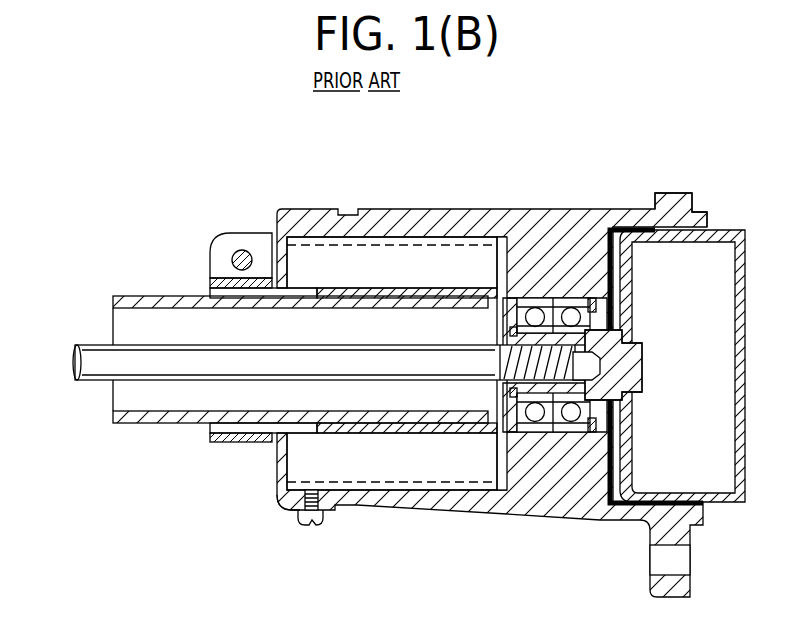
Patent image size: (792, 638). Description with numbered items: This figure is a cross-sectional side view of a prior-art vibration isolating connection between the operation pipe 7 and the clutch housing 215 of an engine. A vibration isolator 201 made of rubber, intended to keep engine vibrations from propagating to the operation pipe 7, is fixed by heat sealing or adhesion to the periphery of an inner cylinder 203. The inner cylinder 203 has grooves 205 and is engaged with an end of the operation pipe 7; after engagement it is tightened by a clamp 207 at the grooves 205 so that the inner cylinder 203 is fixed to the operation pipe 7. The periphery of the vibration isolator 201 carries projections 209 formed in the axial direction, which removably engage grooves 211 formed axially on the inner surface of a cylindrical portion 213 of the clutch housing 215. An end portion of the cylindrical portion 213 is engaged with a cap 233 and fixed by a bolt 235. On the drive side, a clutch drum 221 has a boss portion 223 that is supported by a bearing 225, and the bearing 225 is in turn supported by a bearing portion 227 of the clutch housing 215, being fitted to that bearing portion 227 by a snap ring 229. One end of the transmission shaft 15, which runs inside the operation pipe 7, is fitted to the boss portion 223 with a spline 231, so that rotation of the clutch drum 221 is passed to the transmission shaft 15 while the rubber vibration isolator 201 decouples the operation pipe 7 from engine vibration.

The operation pipe 7 is at (135, 300).
The transmission shaft 15 is at (105, 362).
The vibration isolator 201 is at (470, 237).
The inner cylinder 203 is at (340, 292).
The grooves 205 is at (218, 292).
The clamp 207 is at (223, 250).
The projections 209 is at (430, 245).
The grooves 211 is at (393, 237).
The cylindrical portion 213 is at (380, 218).
The clutch housing 215 is at (628, 215).
The clutch drum 221 is at (715, 238).
The boss portion 223 is at (645, 358).
The bearing 225 is at (568, 312).
The bearing portion 227 is at (597, 268).
The snap ring 229 is at (590, 435).
The spline 231 is at (508, 378).
The cap 233 is at (284, 512).
The bolt 235 is at (322, 518).